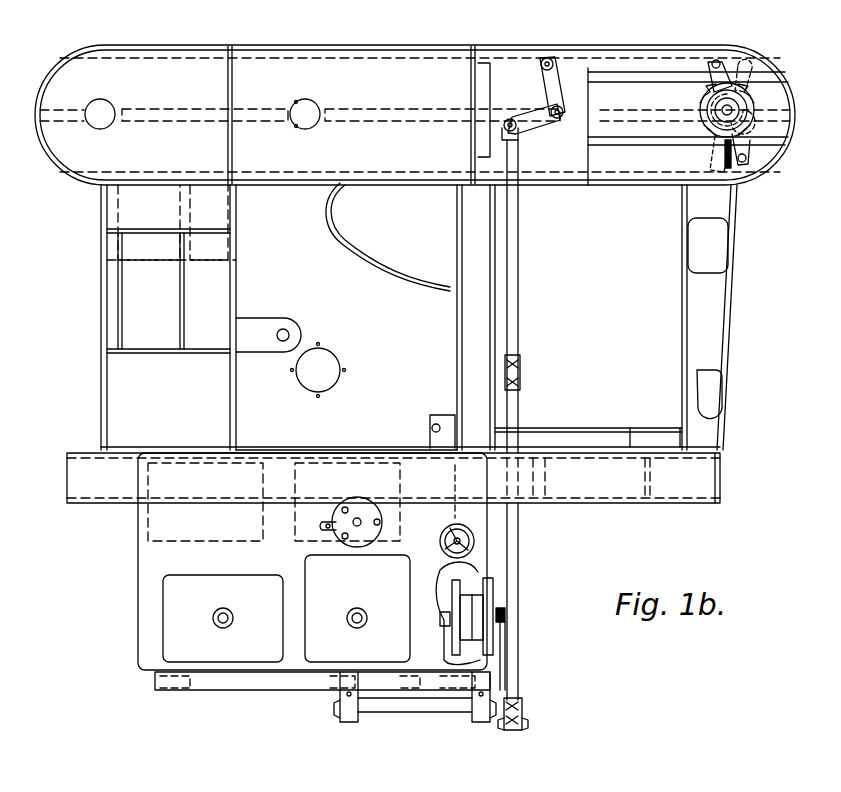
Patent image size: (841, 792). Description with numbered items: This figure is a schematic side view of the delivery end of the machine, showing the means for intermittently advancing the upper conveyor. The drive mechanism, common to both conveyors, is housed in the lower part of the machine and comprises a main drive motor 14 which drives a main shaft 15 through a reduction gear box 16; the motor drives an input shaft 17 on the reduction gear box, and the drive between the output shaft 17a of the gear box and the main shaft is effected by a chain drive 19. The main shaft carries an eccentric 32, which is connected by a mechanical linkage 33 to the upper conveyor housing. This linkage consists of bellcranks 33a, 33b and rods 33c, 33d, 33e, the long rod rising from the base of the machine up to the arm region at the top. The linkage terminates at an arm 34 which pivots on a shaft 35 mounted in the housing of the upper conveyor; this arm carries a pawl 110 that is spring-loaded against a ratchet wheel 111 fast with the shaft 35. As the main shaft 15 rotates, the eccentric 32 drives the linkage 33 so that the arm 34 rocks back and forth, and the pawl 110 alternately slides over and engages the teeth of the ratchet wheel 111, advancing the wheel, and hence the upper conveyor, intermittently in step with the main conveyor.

The main drive motor 14 is at (138, 530).
The main shaft 15 is at (445, 612).
The reduction gear box 16 is at (358, 447).
The input shaft 17 is at (270, 500).
The output shaft 17a is at (455, 500).
The chain drive 19 is at (487, 556).
The eccentric 32 is at (493, 595).
The mechanical linkage 33 is at (522, 355).
The bellcrank 33a is at (505, 650).
The bellcrank 33b is at (531, 128).
The rod 33c is at (506, 614).
The rod 33d is at (518, 293).
The rod 33e is at (588, 185).
The arm 34 is at (728, 168).
The shaft 35 is at (750, 132).
The pawl 110 is at (745, 133).
The ratchet wheel 111 is at (700, 122).